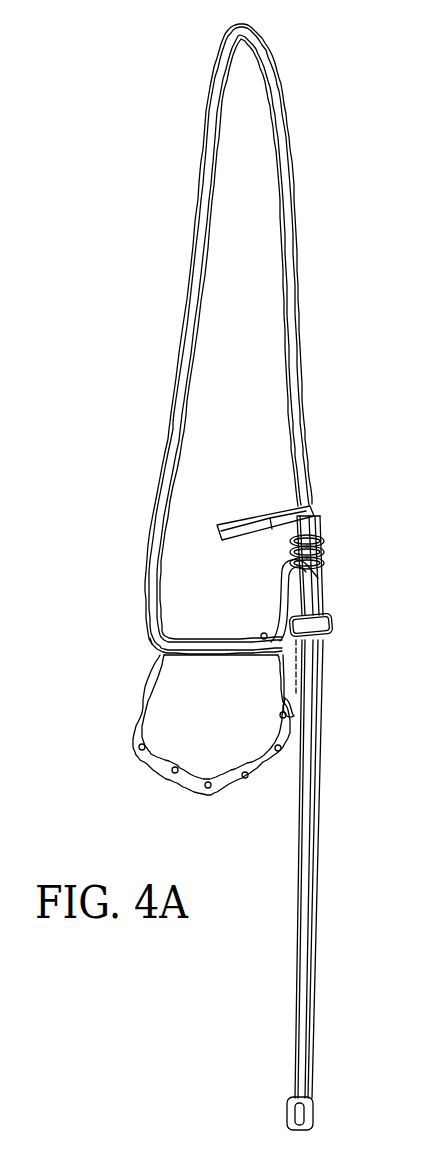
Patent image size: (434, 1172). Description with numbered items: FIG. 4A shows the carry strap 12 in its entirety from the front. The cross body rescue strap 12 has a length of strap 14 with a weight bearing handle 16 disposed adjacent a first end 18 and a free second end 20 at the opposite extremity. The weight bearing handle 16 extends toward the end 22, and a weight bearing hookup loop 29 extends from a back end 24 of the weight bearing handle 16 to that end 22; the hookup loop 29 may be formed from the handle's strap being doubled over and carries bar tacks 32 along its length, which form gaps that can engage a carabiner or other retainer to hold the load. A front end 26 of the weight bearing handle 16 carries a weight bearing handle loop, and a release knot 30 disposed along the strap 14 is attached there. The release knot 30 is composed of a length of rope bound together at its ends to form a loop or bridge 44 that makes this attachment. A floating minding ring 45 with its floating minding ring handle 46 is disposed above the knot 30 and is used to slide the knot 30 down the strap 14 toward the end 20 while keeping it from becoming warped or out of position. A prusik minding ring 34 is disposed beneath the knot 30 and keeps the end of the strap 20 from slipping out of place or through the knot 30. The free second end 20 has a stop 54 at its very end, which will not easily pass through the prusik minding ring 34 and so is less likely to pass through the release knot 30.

The carry strap 12 is at (115, 198).
The length of strap 14 is at (300, 333).
The weight bearing handle 16 is at (198, 660).
The first end 18 is at (135, 679).
The free second end 20 is at (313, 1046).
The end 22 is at (268, 725).
The back end 24 is at (146, 640).
The front end 26 is at (262, 633).
The weight bearing hookup loop 29 is at (180, 792).
The release knot 30 is at (322, 553).
The bar tacks 32 is at (225, 787).
The prusik minding ring 34 is at (332, 620).
The bridge 44 is at (277, 600).
The floating minding ring 45 is at (312, 505).
The floating minding ring handle 46 is at (250, 527).
The stop 54 is at (290, 1112).